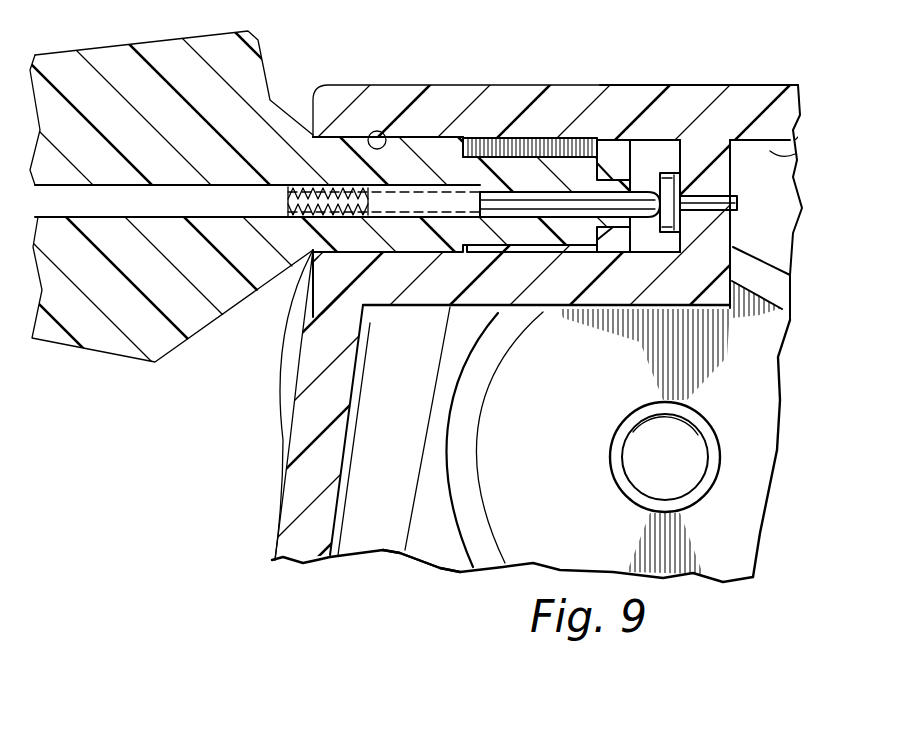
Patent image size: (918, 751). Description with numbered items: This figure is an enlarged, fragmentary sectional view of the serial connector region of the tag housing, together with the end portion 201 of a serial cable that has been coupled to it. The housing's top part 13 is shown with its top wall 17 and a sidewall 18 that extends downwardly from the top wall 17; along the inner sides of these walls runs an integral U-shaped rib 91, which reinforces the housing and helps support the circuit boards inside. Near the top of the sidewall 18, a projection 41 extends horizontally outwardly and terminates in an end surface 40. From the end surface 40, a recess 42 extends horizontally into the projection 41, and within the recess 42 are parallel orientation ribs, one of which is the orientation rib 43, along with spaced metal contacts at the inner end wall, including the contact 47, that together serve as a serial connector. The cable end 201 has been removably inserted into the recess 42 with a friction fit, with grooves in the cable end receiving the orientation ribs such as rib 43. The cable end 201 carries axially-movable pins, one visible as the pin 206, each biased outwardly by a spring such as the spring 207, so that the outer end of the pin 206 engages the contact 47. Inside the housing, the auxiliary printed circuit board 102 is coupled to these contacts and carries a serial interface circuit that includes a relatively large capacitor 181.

The top part 13 is at (763, 83).
The top wall 17 is at (703, 83).
The sidewall 18 is at (275, 508).
The end surface 40 is at (303, 97).
The projection 41 is at (345, 83).
The recess 42 is at (385, 131).
The orientation rib 43 is at (582, 147).
The contact 47 is at (742, 203).
The U-shaped rib 91 is at (795, 154).
The auxiliary printed circuit board 102 is at (432, 560).
The capacitor 181 is at (574, 477).
The end portion of serial cable 201 is at (430, 157).
The pin 206 is at (647, 190).
The spring 207 is at (287, 200).